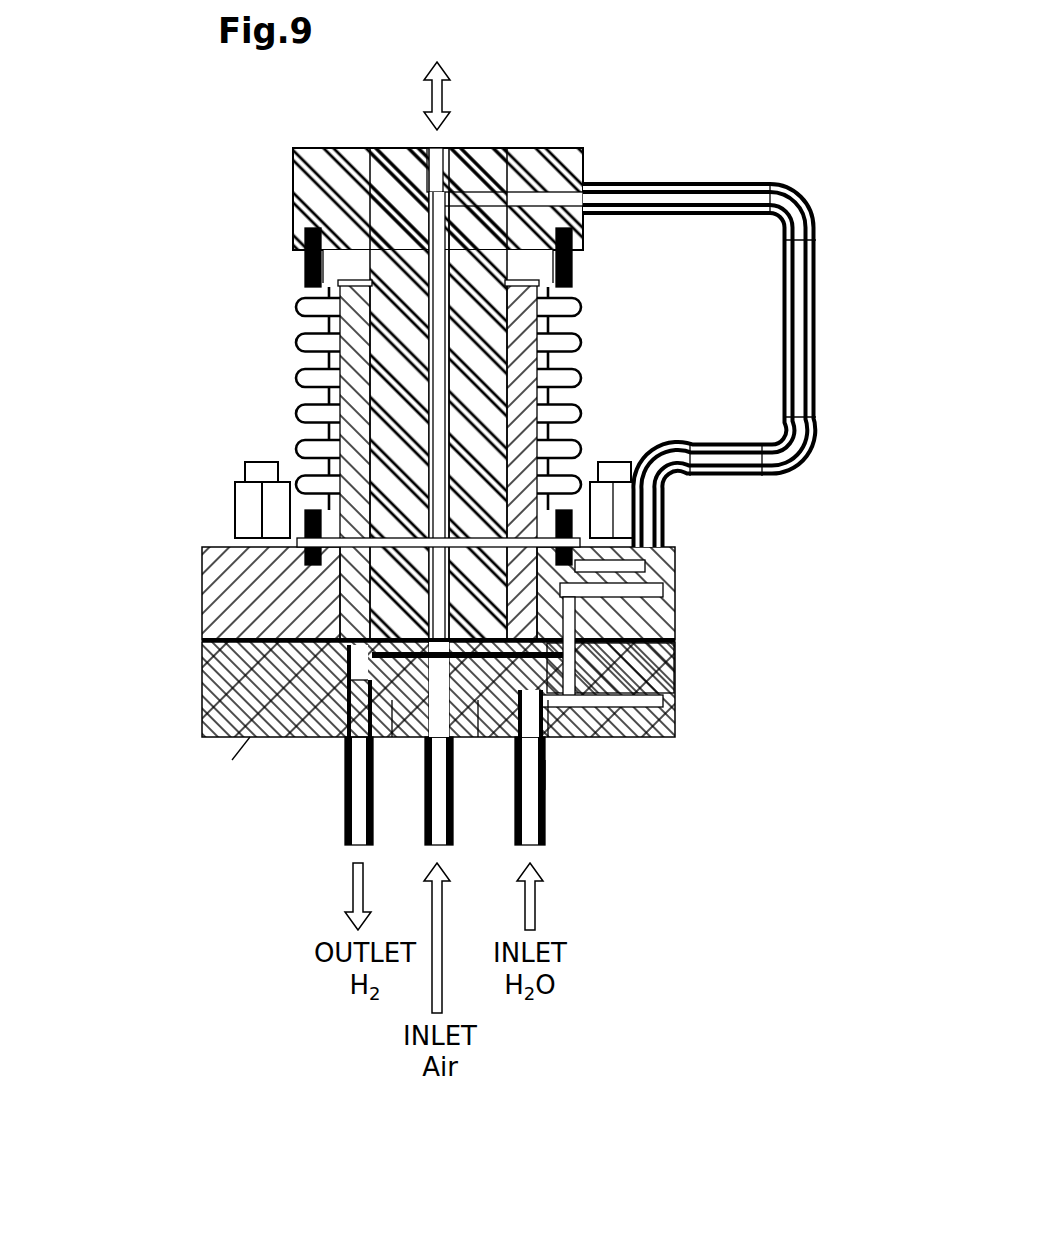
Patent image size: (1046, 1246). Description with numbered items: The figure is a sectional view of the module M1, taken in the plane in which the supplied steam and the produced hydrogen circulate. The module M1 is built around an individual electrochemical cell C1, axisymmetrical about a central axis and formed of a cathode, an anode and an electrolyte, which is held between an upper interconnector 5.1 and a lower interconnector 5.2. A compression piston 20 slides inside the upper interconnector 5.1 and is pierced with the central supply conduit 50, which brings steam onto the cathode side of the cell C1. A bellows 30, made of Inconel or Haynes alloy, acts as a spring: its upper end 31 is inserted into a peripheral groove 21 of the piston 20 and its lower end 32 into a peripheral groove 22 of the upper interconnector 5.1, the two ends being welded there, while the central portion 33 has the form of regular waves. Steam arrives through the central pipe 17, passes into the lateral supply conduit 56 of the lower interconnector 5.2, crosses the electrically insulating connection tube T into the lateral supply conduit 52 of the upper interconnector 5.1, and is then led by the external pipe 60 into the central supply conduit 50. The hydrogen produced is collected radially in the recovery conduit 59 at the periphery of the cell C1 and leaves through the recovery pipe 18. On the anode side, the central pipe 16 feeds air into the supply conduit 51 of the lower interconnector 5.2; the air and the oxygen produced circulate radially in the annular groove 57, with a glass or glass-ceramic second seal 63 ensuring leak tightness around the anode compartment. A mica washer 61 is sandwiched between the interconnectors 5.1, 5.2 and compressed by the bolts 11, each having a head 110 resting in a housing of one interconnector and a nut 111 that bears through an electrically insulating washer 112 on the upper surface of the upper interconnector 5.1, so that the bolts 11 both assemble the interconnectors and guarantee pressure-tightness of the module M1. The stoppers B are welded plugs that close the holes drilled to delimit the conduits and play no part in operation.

The compression piston 20 is at (293, 178).
The stoppers B is at (437, 146).
The central supply conduit 50 is at (458, 205).
The central pipe for supplying air 16 is at (453, 828).
The bellows 30 is at (296, 362).
The central portion 33 is at (582, 345).
The upper end 31 is at (305, 270).
The peripheral groove 21 is at (575, 270).
The lower end 32 is at (305, 560).
The peripheral groove 22 is at (578, 437).
The upper interconnector 5.1 is at (220, 620).
The lower interconnector 5.2 is at (210, 715).
The mica washer 61 is at (215, 672).
The connection tube T is at (675, 668).
The lateral supply conduit 52 is at (668, 570).
The bolt 11 is at (625, 462).
The head 110 is at (245, 470).
The nut 111 is at (235, 500).
The washer 112 is at (230, 538).
The pipe 60 is at (785, 478).
The pipe for recovering the hydrogen produced 18 is at (345, 830).
The central pipe for supplying steam 17 is at (545, 830).
The recovery conduit 59 is at (345, 760).
The annular groove 57 is at (392, 737).
The supply conduit 51 is at (477, 737).
The second seal 63 is at (560, 736).
The lateral supply conduit 56 is at (612, 737).
The individual electrochemical cell C1 is at (207, 766).
The module M1 is at (178, 312).